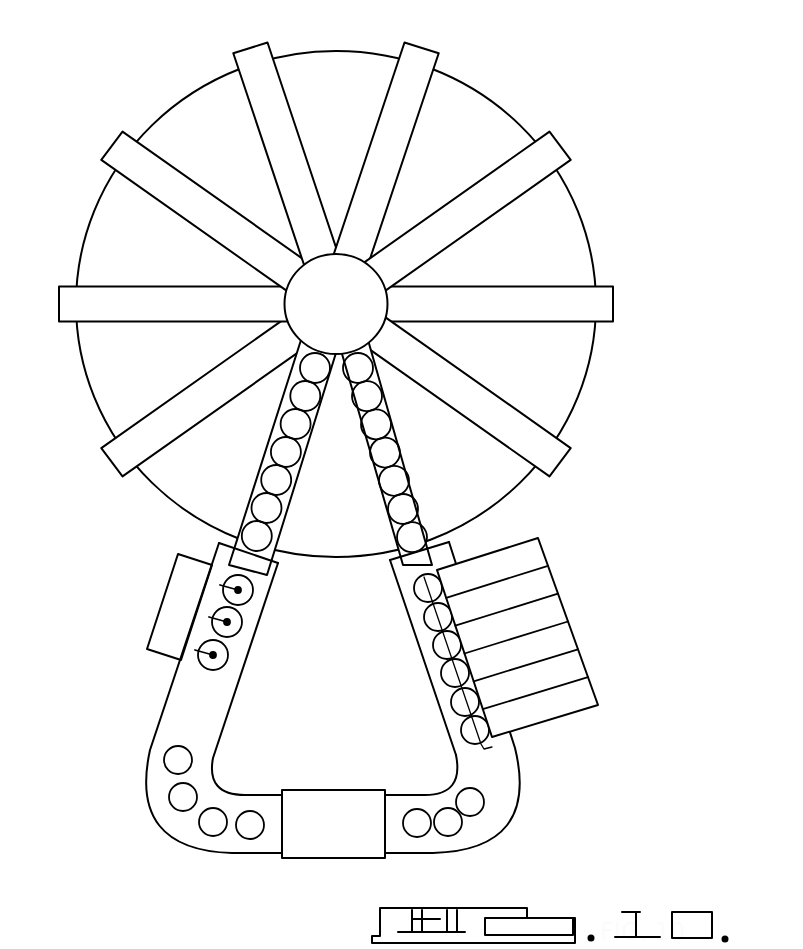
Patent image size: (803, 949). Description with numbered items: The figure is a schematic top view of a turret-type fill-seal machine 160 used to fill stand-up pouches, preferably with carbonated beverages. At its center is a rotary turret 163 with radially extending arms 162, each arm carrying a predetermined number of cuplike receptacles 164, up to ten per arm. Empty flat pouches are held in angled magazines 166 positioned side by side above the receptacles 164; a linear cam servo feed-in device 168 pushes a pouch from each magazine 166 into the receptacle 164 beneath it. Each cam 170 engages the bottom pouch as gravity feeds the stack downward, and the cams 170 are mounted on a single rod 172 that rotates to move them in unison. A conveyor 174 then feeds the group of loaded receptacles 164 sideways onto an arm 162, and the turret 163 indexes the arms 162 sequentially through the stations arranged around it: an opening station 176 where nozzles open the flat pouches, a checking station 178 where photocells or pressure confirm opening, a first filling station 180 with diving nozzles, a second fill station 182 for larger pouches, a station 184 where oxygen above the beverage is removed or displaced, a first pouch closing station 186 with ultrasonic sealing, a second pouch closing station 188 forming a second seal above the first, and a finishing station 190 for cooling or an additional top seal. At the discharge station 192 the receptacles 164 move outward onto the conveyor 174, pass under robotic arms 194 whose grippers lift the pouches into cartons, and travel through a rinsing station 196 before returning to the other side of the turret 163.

The fill-seal machine 160 is at (106, 104).
The radially extending arm 162 is at (567, 145).
The rotary turret 163 is at (360, 322).
The cuplike receptacle 164 is at (400, 477).
The magazine 166 is at (550, 580).
The linear cam servo feed-in device 168 is at (510, 750).
The cam 170 is at (430, 688).
The rod 172 is at (452, 723).
The conveyor 174 is at (403, 617).
The opening station 176 is at (553, 442).
The checking station 178 is at (588, 303).
The first filling station 180 is at (515, 175).
The second fill station 182 is at (397, 78).
The oxygen removal station 184 is at (258, 60).
The first pouch closing station 186 is at (157, 172).
The second pouch closing station 188 is at (88, 297).
The finishing station 190 is at (133, 432).
The discharge station 192 is at (252, 494).
The robotic arm 194 is at (182, 608).
The rinsing station 196 is at (358, 843).